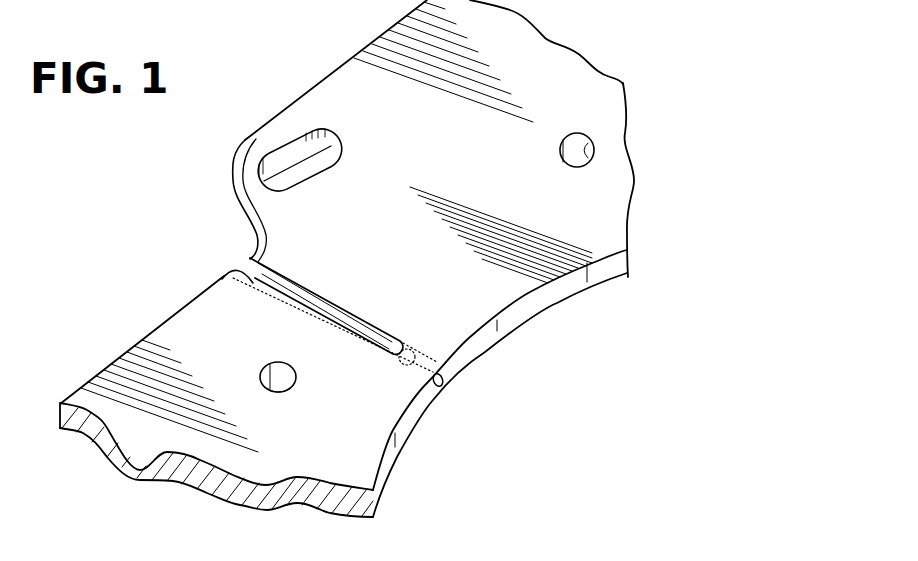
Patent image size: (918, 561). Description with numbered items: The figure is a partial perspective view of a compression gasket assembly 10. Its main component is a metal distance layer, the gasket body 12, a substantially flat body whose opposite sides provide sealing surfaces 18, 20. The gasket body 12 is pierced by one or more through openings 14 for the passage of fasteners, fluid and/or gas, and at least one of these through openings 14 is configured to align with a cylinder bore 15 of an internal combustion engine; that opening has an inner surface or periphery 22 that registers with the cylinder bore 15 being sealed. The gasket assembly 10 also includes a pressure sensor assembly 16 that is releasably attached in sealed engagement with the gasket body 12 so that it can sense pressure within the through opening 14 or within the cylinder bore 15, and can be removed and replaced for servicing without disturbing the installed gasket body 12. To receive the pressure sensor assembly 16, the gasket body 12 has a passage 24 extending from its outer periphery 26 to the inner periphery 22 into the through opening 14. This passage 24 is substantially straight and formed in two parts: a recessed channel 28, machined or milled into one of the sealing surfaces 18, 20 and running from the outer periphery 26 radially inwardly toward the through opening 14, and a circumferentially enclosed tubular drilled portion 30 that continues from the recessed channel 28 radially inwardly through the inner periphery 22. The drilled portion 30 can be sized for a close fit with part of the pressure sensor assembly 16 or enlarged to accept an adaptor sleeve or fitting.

The compression gasket assembly 10 is at (743, 113).
The gasket body 12 is at (610, 70).
The through openings 14 is at (278, 160).
The cylinder bore 15 is at (590, 406).
The pressure sensor assembly 16 is at (430, 348).
The sealing surface 18 is at (608, 197).
The sealing surface 20 is at (577, 293).
The inner periphery 22 is at (417, 410).
The passage 24 is at (242, 261).
The outer periphery 26 is at (186, 305).
The recessed channel 28 is at (222, 276).
The drilled portion 30 is at (455, 390).